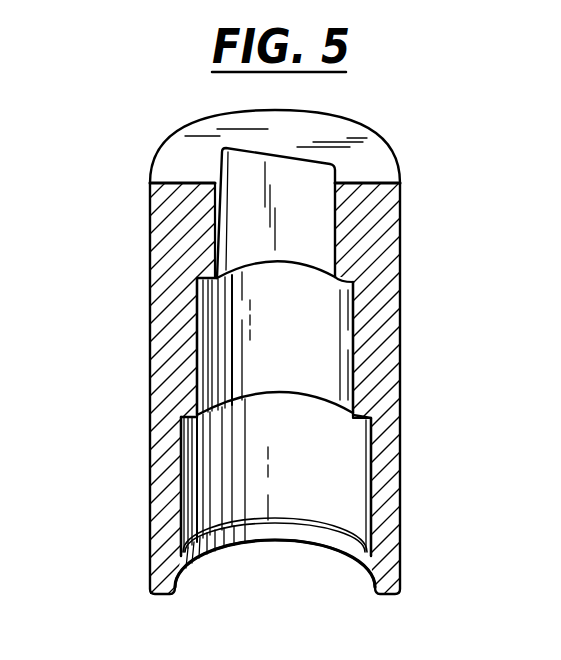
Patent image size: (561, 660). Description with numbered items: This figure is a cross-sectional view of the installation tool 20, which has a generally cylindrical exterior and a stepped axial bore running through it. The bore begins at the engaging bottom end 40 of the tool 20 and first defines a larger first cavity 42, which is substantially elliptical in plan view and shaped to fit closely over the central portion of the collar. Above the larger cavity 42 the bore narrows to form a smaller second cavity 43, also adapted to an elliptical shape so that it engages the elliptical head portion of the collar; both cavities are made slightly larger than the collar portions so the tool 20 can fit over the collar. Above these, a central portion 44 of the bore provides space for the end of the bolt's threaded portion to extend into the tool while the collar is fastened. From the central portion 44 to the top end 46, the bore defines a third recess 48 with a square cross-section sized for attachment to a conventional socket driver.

The installation tool 20 is at (130, 143).
The bottom end 40 is at (388, 595).
The larger first cavity 42 is at (307, 535).
The smaller second cavity 43 is at (322, 447).
The central portion of the bore 44 is at (308, 328).
The top end 46 is at (361, 154).
The third recess 48 is at (313, 218).